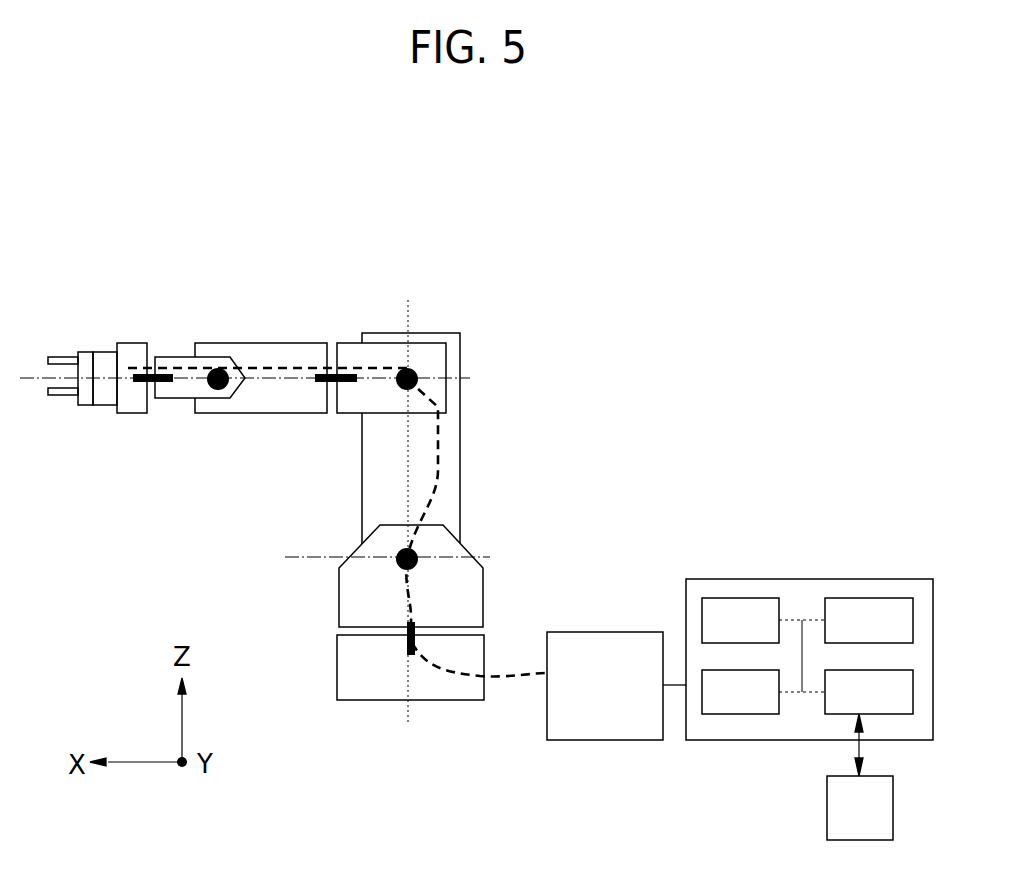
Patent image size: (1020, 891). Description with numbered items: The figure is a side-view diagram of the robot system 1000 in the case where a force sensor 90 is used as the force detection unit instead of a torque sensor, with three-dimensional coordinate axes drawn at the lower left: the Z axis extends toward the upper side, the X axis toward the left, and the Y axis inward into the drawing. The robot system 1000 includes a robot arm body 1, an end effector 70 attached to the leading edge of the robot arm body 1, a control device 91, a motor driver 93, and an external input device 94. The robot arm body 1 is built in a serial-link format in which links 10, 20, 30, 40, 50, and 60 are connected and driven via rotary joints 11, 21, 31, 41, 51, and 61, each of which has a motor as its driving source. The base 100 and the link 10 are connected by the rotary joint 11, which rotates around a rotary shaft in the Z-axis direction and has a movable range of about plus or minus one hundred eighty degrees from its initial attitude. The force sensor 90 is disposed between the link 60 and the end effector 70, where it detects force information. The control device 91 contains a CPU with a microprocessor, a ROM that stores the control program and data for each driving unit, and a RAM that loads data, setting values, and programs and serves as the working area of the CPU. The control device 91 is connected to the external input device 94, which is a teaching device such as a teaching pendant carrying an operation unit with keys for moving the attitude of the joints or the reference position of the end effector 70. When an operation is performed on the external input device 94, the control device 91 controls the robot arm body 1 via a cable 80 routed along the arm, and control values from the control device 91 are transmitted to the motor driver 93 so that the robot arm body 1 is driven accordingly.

The robot system 1000 is at (565, 198).
The robot arm body 1 is at (486, 302).
The link 10 is at (467, 547).
The rotary joint 11 is at (407, 641).
The link 20 is at (440, 333).
The rotary joint 21 is at (398, 562).
The link 30 is at (352, 343).
The rotary joint 31 is at (415, 372).
The link 40 is at (267, 343).
The rotary joint 41 is at (318, 382).
The link 50 is at (178, 357).
The rotary joint 51 is at (213, 390).
The link 60 is at (133, 343).
The rotary joint 61 is at (138, 382).
The end effector 70 is at (80, 352).
The cable 80 is at (440, 463).
The force sensor 90 is at (100, 352).
The control device 91 is at (808, 579).
The motor driver 93 is at (603, 632).
The external input device 94 is at (827, 810).
The base 100 is at (484, 655).